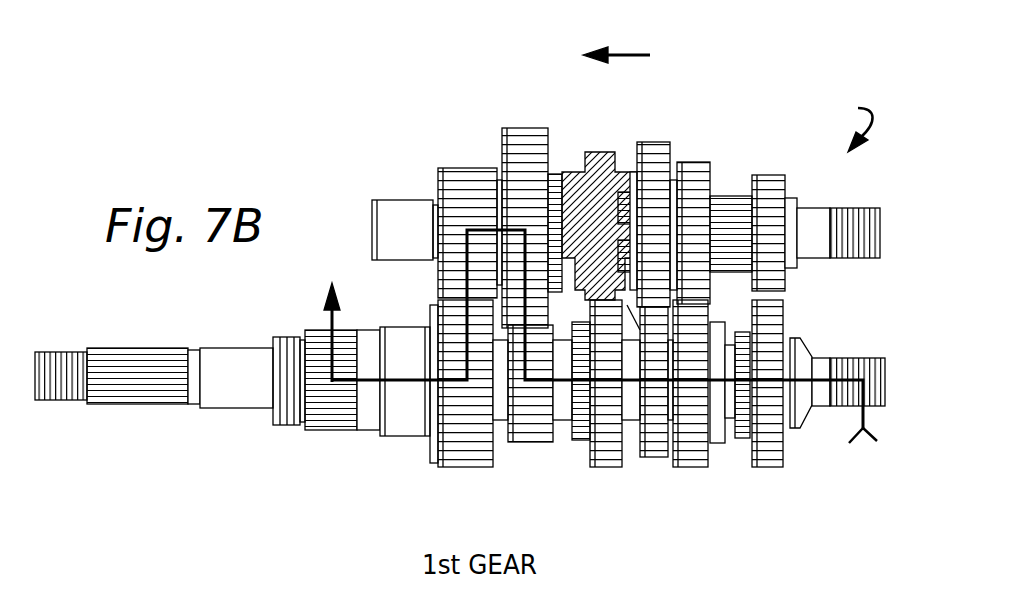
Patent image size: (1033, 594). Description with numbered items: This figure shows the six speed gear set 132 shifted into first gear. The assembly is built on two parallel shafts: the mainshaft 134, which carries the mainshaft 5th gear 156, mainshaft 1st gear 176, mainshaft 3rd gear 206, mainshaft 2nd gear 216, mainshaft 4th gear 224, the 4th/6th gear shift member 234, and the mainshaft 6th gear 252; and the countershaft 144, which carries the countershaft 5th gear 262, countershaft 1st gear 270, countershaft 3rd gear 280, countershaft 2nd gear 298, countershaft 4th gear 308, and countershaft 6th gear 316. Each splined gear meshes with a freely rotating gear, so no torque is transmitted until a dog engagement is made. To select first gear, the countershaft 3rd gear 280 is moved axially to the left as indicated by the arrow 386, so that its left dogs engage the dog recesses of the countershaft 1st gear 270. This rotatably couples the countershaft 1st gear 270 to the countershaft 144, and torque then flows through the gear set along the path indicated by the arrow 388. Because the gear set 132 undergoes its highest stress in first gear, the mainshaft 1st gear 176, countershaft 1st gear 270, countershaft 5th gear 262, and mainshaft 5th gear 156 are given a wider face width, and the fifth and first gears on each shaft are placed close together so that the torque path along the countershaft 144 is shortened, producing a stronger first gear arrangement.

The six speed gear set 132 is at (839, 123).
The mainshaft 134 is at (205, 345).
The countershaft 144 is at (396, 200).
The mainshaft 5th gear 156 is at (452, 467).
The mainshaft 1st gear 176 is at (540, 442).
The mainshaft 3rd gear 206 is at (606, 467).
The mainshaft 2nd gear 216 is at (655, 457).
The mainshaft 4th gear 224 is at (690, 467).
The 4th/6th gear shift member 234 is at (718, 443).
The mainshaft 6th gear 252 is at (785, 467).
The countershaft 5th gear 262 is at (470, 168).
The countershaft 1st gear 270 is at (525, 128).
The countershaft 3rd gear 280 is at (596, 152).
The countershaft 2nd gear 298 is at (653, 142).
The countershaft 4th gear 308 is at (696, 162).
The countershaft 6th gear 316 is at (767, 175).
The arrow 386 is at (634, 55).
The arrow 388 is at (847, 418).